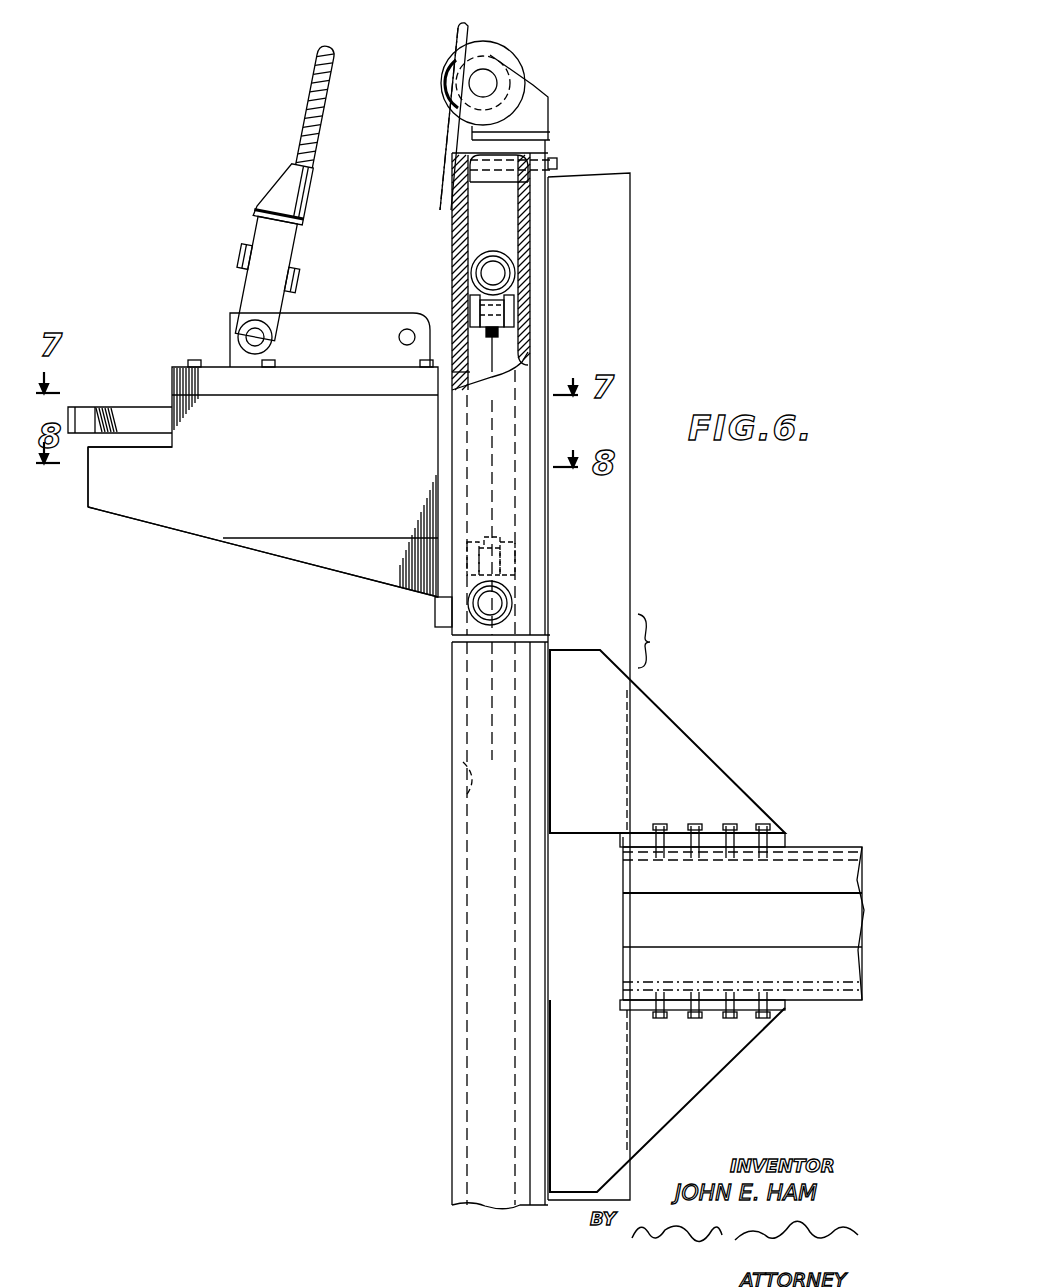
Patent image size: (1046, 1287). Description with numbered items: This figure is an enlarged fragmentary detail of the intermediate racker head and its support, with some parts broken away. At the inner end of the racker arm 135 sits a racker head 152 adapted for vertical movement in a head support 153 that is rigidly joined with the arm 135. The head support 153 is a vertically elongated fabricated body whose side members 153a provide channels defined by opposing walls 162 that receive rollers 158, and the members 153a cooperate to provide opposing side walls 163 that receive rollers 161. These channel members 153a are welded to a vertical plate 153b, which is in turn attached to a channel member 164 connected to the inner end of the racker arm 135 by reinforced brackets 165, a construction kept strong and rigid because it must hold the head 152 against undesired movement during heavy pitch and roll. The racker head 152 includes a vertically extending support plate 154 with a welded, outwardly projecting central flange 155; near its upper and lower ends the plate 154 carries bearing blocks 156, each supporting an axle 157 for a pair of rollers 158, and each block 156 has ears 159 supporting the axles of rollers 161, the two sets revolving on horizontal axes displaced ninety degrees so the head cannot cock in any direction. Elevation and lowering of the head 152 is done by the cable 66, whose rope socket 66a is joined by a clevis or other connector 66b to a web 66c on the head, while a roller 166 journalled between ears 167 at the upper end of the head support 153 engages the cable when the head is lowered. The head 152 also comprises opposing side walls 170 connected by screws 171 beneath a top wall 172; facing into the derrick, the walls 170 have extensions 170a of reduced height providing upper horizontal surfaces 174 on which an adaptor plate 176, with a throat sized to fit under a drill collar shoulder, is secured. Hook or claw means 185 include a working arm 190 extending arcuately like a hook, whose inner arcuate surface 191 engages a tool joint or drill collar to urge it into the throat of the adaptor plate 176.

The cable 66 is at (305, 98).
The rope socket 66a is at (303, 192).
The clevis or other connector 66b is at (256, 293).
The web 66c is at (292, 320).
The racker arm 135 is at (800, 847).
The racker head 152 is at (178, 525).
The head support 153 is at (455, 692).
The side members 153a is at (525, 230).
The vertical plate 153b is at (538, 530).
The support plate 154 is at (440, 617).
The central flange 155 is at (440, 380).
The bearing blocks 156 is at (470, 297).
The axle 157 is at (490, 272).
The rollers 158 is at (506, 288).
The ears 159 is at (510, 312).
The rollers 161 is at (500, 335).
The opposing walls 162 is at (513, 812).
The opposing side walls 163 is at (505, 203).
The channel member 164 is at (618, 192).
The reinforced brackets 165 is at (705, 830).
The roller 166 is at (508, 58).
The ears 167 is at (540, 108).
The side walls 170 is at (263, 482).
The extensions 170a is at (115, 493).
The screws 171 is at (200, 360).
The top wall 172 is at (330, 387).
The upper horizontal surfaces 174 is at (128, 443).
The adaptor plate 176 is at (98, 455).
The hook or claw means 185 is at (96, 407).
The working arm 190 is at (128, 408).
The inner arcuate surface 191 is at (117, 413).